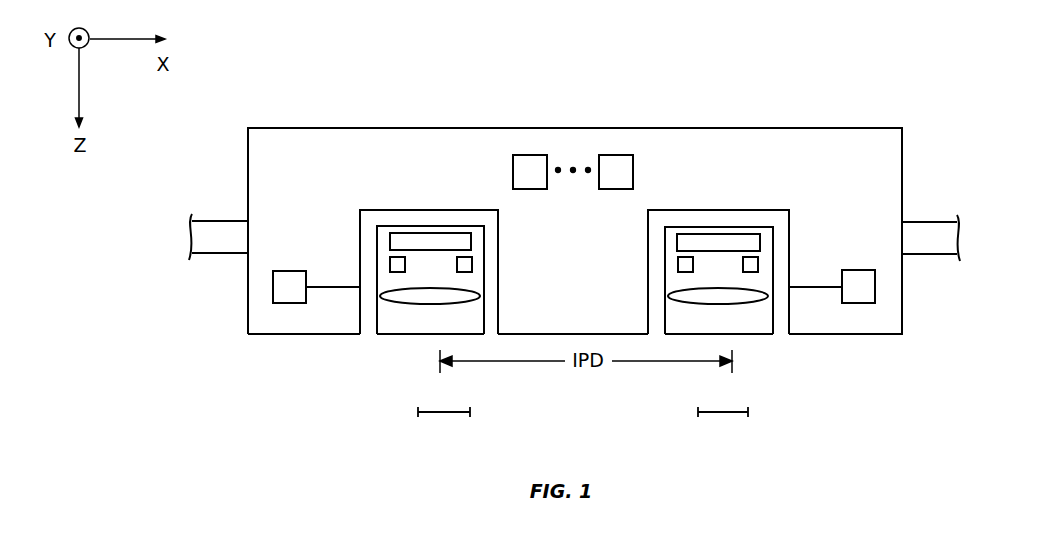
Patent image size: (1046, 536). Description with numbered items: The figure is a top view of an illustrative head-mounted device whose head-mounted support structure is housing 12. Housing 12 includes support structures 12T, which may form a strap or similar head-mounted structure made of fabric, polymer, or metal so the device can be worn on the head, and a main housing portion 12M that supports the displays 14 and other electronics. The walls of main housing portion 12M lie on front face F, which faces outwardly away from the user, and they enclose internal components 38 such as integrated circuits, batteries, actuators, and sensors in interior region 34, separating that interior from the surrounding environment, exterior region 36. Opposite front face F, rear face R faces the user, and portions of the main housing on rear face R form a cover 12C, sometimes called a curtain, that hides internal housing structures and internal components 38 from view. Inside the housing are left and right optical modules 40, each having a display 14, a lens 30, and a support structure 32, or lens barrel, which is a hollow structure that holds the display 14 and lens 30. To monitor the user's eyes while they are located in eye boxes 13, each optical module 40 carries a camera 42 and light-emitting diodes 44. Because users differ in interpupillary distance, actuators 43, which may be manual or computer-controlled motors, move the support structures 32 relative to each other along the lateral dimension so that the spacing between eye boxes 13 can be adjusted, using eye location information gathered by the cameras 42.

The housing 12 is at (842, 137).
The main housing portion 12M is at (275, 126).
The cover 12C is at (263, 337).
The support structures 12T is at (220, 240).
The exterior region 36 is at (390, 95).
The interior region 34 is at (866, 178).
The front face F is at (705, 111).
The rear face R is at (855, 362).
The internal components 38 is at (617, 172).
The support structure 32 is at (380, 221).
The display 14 is at (453, 240).
The light-emitting diodes 44 is at (390, 263).
The camera 42 is at (678, 263).
The lens 30 is at (668, 296).
The actuators 43 is at (288, 285).
The optical module 40 is at (350, 324).
The eye boxes 13 is at (470, 412).